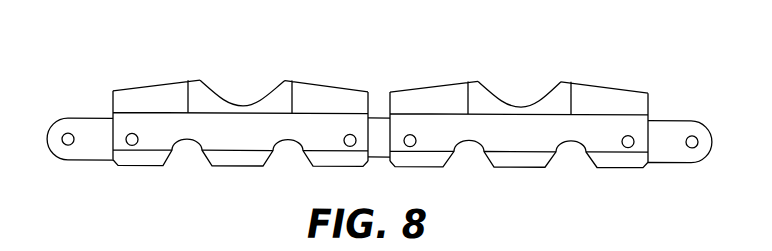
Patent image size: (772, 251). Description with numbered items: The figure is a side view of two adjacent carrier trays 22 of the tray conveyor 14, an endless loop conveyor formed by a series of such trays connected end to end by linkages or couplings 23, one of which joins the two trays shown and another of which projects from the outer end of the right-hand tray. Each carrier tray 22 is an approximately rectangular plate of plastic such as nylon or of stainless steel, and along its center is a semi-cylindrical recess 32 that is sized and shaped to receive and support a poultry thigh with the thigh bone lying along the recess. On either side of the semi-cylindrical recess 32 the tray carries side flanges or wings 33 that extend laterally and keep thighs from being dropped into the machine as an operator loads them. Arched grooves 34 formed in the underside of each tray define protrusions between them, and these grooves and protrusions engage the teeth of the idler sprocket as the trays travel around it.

The tray conveyor 14 is at (70, 72).
The carrier tray 22 is at (135, 83).
The linkage or coupling 23 is at (668, 128).
The semi-cylindrical recess 32 is at (215, 93).
The side flange or wing 33 is at (174, 83).
The arched groove 34 is at (172, 154).